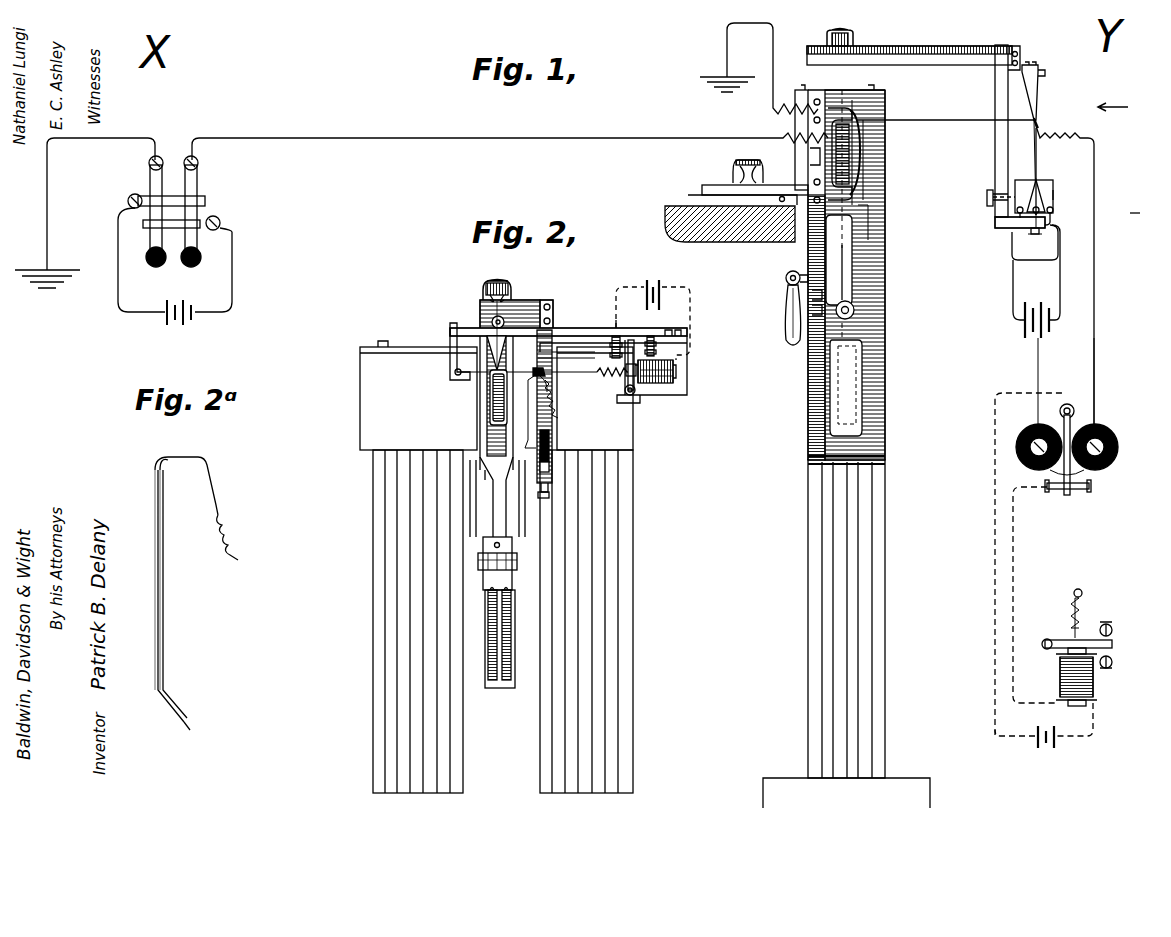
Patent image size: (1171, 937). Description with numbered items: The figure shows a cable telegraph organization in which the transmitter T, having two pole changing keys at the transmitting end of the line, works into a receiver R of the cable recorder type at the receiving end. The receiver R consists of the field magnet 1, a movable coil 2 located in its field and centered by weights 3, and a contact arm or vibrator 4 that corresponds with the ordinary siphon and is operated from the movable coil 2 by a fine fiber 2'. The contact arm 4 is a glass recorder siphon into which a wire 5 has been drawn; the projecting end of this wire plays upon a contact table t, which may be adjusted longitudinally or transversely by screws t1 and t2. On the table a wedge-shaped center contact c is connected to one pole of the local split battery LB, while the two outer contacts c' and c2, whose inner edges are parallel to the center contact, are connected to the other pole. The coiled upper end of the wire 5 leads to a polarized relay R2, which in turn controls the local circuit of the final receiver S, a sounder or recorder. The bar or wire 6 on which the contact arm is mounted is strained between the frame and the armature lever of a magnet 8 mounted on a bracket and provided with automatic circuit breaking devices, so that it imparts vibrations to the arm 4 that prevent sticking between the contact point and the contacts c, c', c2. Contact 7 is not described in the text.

In FIG. 1, the field magnet 1 is at (808, 576).
In FIG. 2, the field magnet 1 is at (373, 570).
In FIG. 1, the movable coil 2 is at (848, 170).
In FIG. 2, the movable coil 2 is at (472, 419).
In FIG. 1, the fine fiber 2' is at (946, 106).
In FIG. 1, the weights 3 is at (840, 388).
In FIG. 2, the weights 3 is at (488, 628).
In FIG. 1, the contact arm 4 is at (1040, 128).
In FIG. 2, the contact arm 4 is at (541, 445).
In FIG. 2A, the contact arm 4 is at (155, 512).
In FIG. 2, the wire 5 is at (558, 418).
In FIG. 2A, the wire 5 is at (232, 535).
In FIG. 2, the bar or wire 6 is at (582, 372).
In FIG. 1, the contact 7 is at (1030, 128).
In FIG. 2, the contact 7 is at (545, 378).
In FIG. 2, the magnet 8 is at (668, 360).
In FIG. 1, the center contact c is at (1036, 196).
In FIG. 1, the outer contact c' is at (1034, 183).
In FIG. 1, the outer contact c2 is at (1046, 182).
In FIG. 1, the contact table t is at (1030, 206).
In FIG. 2, the contact table t is at (537, 455).
In FIG. 1, the adjusting screw t1 is at (987, 200).
In FIG. 1, the adjusting screw t2 is at (1030, 235).
In FIG. 2, the adjusting screw t2 is at (538, 495).
In FIG. 1, the local split battery LB is at (1053, 326).
In FIG. 1, the receiver R is at (736, 252).
In FIG. 2, the receiver R is at (546, 320).
In FIG. 1, the polarized relay R2 is at (1064, 564).
In FIG. 1, the final receiver S is at (1060, 672).
In FIG. 1, the transmitter T is at (175, 240).